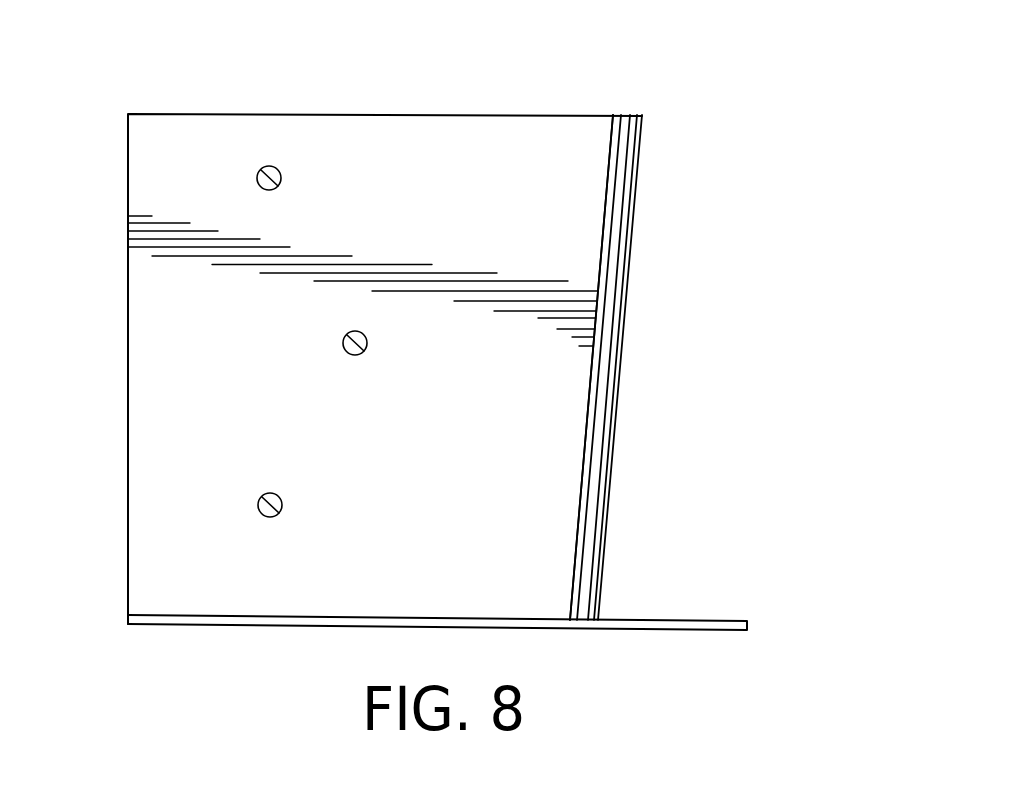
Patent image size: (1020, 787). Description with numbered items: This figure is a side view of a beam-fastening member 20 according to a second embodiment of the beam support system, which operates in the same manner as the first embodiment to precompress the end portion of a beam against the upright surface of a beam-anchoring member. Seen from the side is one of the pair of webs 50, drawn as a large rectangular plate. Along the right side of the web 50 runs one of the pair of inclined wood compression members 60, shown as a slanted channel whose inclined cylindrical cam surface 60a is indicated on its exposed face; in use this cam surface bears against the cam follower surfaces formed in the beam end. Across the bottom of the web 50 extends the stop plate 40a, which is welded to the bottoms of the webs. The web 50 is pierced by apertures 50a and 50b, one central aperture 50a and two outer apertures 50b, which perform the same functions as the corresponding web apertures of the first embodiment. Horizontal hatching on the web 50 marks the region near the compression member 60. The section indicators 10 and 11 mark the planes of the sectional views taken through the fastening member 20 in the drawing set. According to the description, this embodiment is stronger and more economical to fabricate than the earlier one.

The section line 10- 10 is at (240, 62).
The section line 11- 11 is at (97, 208).
The fastening member 20 is at (528, 104).
The stop plate 40a is at (638, 630).
The web 50 is at (153, 539).
The aperture 50a is at (367, 347).
The aperture 50b is at (281, 182).
The inclined wood compression member 60 is at (603, 363).
The inclined cylindrical cam surface 60a is at (583, 447).